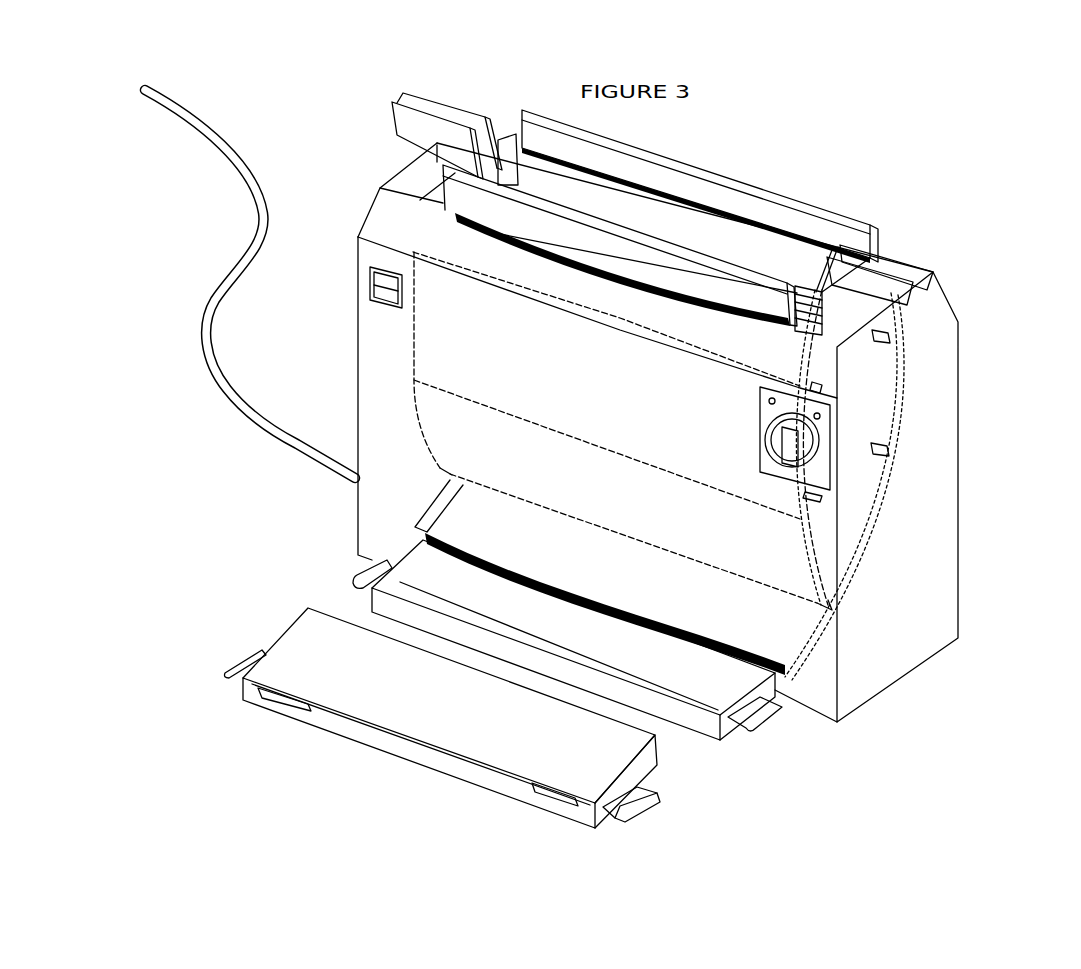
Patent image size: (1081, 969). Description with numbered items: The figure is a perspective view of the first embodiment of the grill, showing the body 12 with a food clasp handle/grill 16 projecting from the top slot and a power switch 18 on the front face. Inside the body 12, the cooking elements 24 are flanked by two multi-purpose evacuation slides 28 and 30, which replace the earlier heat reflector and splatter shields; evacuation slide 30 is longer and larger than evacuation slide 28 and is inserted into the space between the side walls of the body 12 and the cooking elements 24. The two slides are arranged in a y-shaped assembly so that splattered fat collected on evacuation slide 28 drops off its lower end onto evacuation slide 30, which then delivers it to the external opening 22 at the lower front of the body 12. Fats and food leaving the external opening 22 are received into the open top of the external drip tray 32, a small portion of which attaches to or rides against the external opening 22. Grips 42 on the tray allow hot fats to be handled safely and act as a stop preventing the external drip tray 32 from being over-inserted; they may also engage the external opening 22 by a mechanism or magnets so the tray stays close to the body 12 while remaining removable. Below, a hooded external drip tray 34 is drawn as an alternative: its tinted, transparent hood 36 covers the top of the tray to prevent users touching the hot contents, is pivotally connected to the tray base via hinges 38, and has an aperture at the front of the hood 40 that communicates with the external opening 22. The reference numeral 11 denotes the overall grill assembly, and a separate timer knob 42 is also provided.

The toaster assembly 11 is at (995, 140).
The body 12 is at (940, 398).
The food clasp handle/grill 16 is at (413, 132).
The power switch 18 is at (364, 260).
The external opening 22 is at (413, 543).
The cooking element 24 is at (832, 384).
The evacuation slide 28 is at (600, 220).
The evacuation slide 30 is at (795, 198).
The external drip tray 32 is at (383, 601).
The hooded external drip tray 34 is at (327, 725).
The hood 36 is at (438, 715).
The hinges 38 is at (543, 792).
The aperture at the front of the hood 40 is at (665, 752).
The grips 42 is at (810, 433).